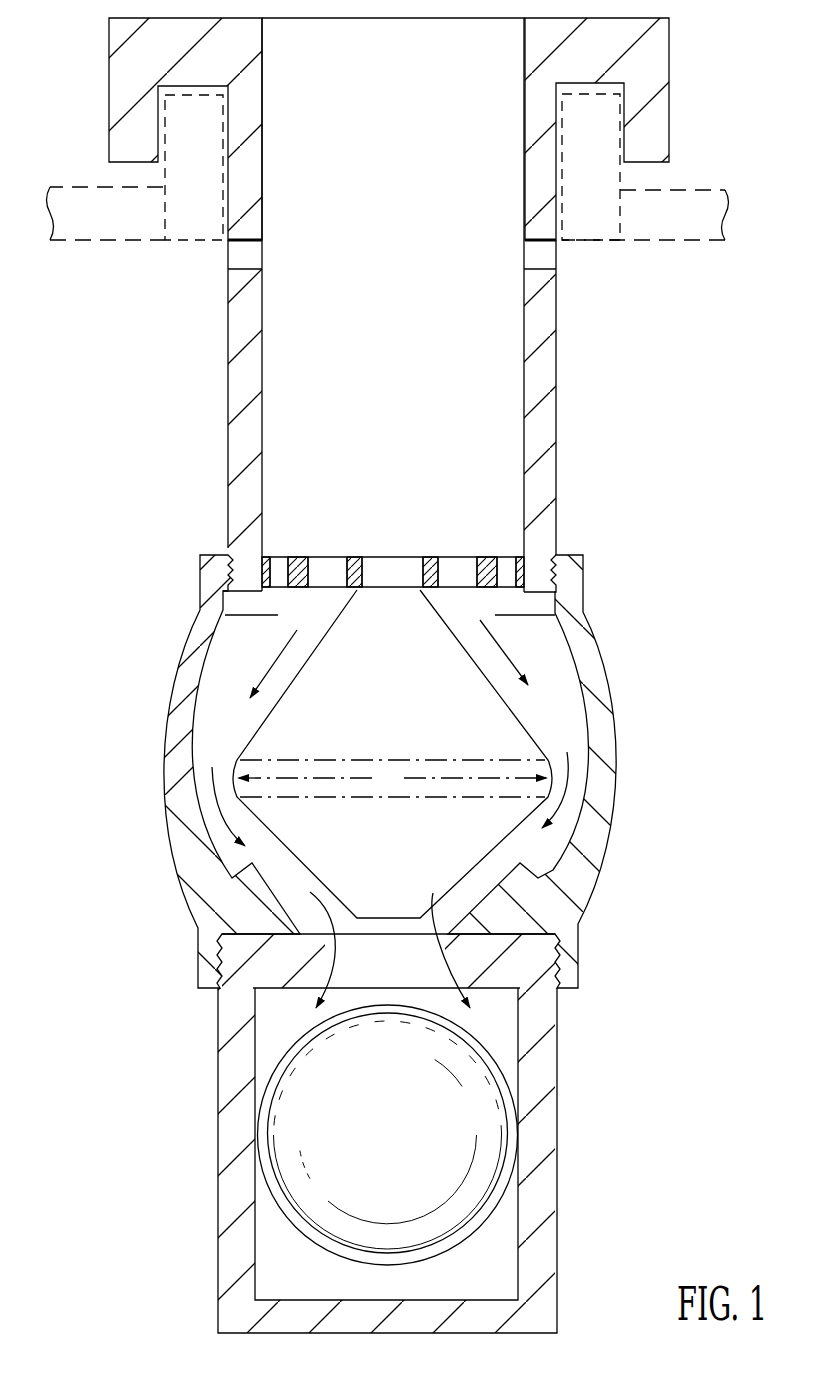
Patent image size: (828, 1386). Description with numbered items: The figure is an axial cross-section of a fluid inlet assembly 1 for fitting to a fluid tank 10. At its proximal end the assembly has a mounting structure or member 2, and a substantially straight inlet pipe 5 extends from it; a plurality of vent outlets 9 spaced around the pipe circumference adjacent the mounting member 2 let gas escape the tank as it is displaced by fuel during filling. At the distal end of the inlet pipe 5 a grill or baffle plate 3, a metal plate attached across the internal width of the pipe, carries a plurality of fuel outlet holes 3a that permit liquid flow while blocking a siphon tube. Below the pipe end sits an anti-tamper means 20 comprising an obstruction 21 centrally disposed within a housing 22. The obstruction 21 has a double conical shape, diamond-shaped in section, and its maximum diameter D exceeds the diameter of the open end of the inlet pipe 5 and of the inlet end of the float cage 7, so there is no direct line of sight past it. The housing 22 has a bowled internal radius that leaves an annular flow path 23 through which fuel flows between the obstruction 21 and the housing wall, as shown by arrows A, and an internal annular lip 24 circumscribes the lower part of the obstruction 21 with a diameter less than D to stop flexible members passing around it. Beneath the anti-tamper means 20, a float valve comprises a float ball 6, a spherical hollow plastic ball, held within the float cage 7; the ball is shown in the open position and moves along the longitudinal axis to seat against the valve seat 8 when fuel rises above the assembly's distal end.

The fluid inlet assembly 1 is at (610, 419).
The mounting structure or member 2 is at (88, 128).
The grill or baffle plate 3 is at (483, 563).
The fuel outlet holes 3a is at (335, 567).
The inlet pipe 5 is at (225, 382).
The float ball 6 is at (468, 1115).
The float cage 7 is at (230, 1062).
The valve seat 8 is at (480, 962).
The vent outlets 9 is at (240, 255).
The fluid tank 10 is at (130, 233).
The anti-tamper means 20 is at (397, 771).
The obstruction 21 is at (482, 812).
The housing 22 is at (173, 739).
The annular flow path 23 is at (218, 722).
The internal annular lip 24 is at (518, 866).
The arrows A is at (222, 817).
The maximum diameter of the obstruction D is at (392, 778).